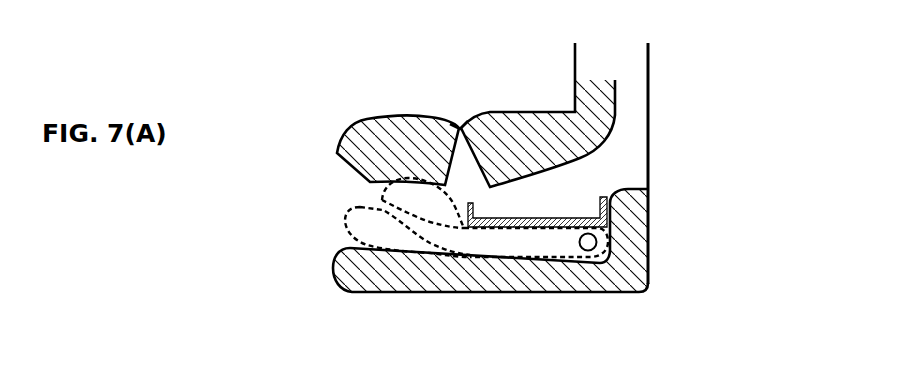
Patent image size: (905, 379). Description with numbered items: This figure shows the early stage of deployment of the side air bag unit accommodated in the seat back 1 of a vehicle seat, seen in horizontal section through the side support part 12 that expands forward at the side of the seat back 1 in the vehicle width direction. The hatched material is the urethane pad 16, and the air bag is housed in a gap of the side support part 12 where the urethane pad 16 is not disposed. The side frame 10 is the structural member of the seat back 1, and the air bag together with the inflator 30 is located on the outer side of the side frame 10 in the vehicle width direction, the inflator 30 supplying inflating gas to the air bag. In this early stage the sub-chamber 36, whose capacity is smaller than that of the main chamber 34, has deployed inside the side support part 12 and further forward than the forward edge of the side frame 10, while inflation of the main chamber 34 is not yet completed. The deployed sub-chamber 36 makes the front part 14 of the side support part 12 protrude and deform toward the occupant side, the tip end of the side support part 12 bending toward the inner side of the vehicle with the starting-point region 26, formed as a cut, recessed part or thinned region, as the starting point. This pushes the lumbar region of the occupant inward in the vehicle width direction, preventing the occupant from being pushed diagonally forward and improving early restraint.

The seat back 1 is at (646, 61).
The side frame 10 is at (605, 196).
The side support part 12 is at (286, 111).
The front part 14 is at (381, 117).
The urethane pad 16 is at (598, 88).
The starting-point region 26 is at (458, 124).
The inflator 30 is at (590, 262).
The main chamber 34 is at (345, 222).
The sub-chamber 36 is at (382, 199).